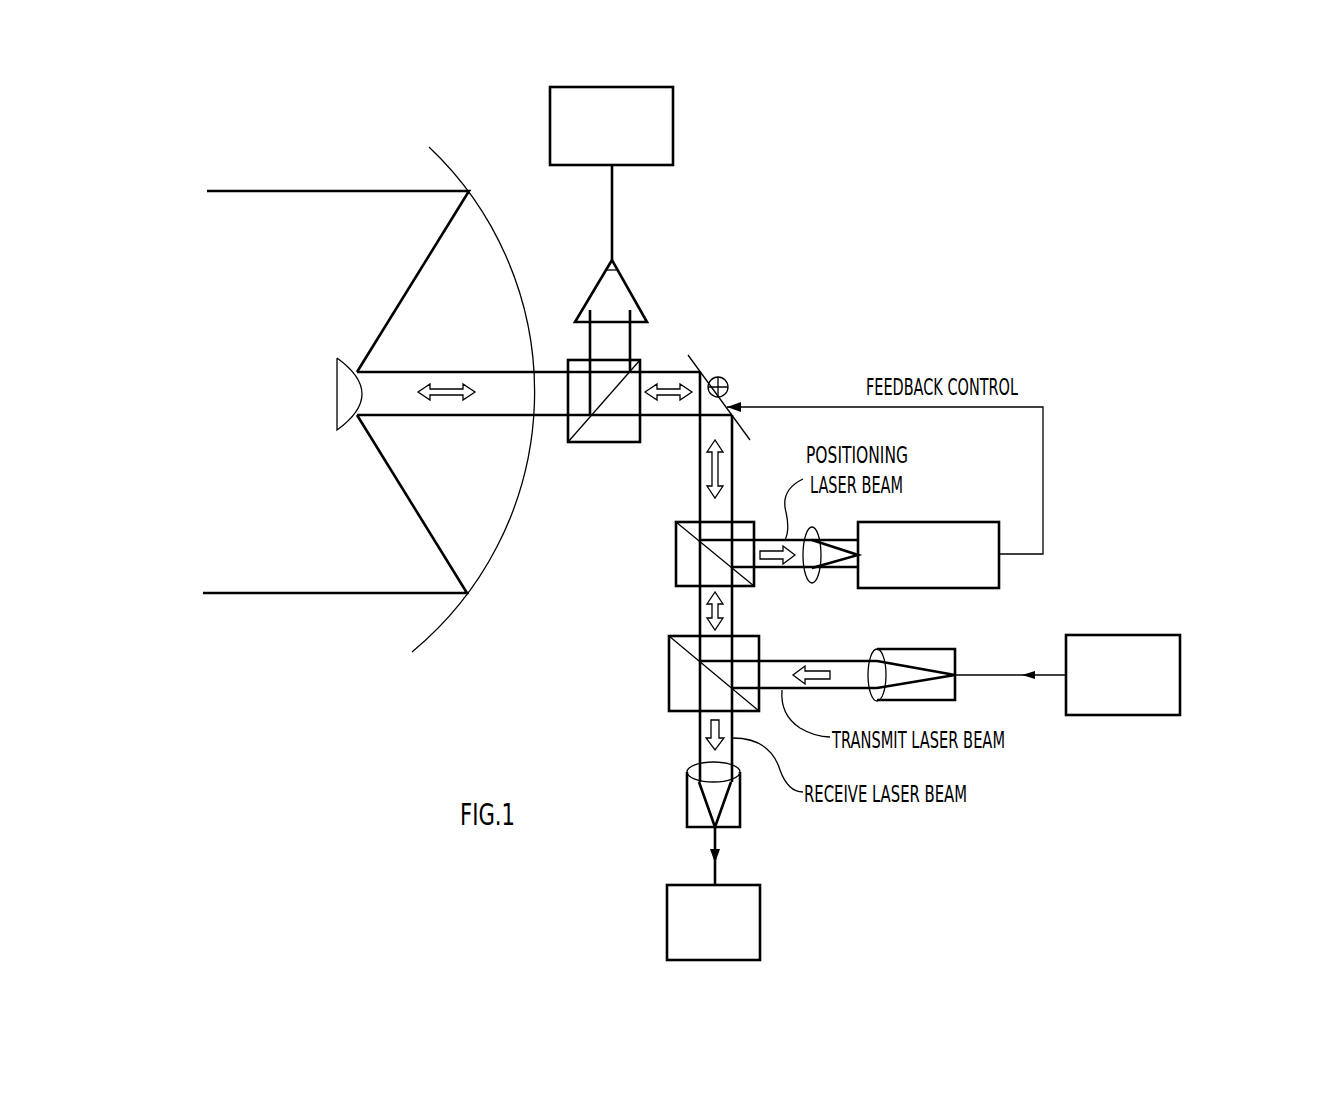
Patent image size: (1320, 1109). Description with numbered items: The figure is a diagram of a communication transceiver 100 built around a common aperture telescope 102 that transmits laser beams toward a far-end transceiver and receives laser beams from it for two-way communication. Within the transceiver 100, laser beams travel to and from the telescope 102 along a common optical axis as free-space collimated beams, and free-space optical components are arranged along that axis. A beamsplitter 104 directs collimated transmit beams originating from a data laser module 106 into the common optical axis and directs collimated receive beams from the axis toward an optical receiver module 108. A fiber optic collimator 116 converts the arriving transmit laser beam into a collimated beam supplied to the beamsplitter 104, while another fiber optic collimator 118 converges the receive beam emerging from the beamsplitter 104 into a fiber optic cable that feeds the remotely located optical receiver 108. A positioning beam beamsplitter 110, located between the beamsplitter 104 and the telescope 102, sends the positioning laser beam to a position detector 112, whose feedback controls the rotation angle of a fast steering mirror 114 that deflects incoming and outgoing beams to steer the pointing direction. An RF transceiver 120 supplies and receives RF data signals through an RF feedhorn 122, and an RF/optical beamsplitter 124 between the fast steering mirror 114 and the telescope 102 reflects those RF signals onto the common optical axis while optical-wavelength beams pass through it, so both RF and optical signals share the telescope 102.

The transceiver 100 is at (940, 215).
The common aperture telescope 102 is at (452, 168).
The beamsplitter 104 is at (669, 665).
The data laser module 106 is at (1180, 675).
The optical receiver module 108 is at (760, 933).
The positioning beam beamsplitter 110 is at (676, 551).
The position detector 112 is at (967, 588).
The fast steering mirror 114 is at (745, 428).
The fiber optic collimator 116 is at (940, 700).
The fiber optic collimator 118 is at (687, 784).
The RF transceiver 120 is at (673, 127).
The RF feedhorn 122 is at (632, 291).
The RF/optical beamsplitter 124 is at (607, 443).